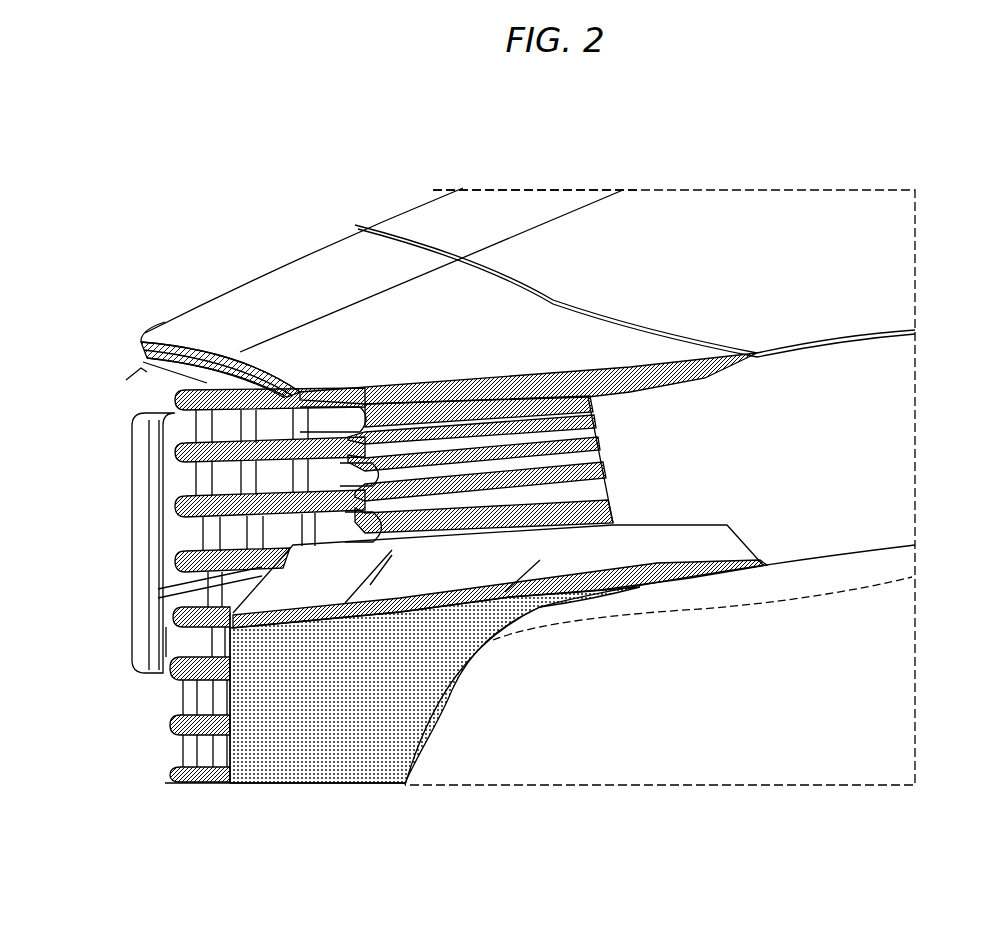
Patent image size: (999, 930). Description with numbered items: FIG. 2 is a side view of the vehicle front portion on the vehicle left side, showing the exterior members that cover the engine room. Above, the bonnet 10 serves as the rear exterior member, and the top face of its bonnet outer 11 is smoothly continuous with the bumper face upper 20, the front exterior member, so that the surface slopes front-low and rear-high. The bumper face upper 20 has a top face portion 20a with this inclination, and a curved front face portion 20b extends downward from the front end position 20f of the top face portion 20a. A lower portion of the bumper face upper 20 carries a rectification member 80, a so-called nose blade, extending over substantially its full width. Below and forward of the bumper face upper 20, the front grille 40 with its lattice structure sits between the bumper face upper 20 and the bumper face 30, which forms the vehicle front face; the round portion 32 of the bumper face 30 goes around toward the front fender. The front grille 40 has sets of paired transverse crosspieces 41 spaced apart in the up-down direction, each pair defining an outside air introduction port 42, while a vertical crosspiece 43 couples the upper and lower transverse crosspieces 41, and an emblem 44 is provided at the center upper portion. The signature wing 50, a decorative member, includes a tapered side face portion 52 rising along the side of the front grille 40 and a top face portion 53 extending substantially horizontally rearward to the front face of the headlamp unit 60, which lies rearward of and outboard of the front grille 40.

The bonnet 10 is at (880, 236).
The bonnet outer 11 is at (520, 205).
The bumper face upper 20 is at (419, 293).
The top face portion 20a is at (335, 250).
The front face portion 20b is at (139, 347).
The front end position 20f is at (157, 332).
The rectification member 80 is at (138, 372).
The bumper face 30 is at (692, 665).
The round portion 32 is at (770, 695).
The front grille 40 is at (170, 725).
The transverse crosspieces 41 is at (172, 455).
The outside air introduction port 42 is at (182, 538).
The vertical crosspiece 43 is at (152, 606).
The emblem 44 is at (133, 562).
The signature wing 50 is at (498, 694).
The side face portion 52 is at (335, 705).
The top face portion 53 is at (650, 525).
The headlamp unit 60 is at (810, 457).